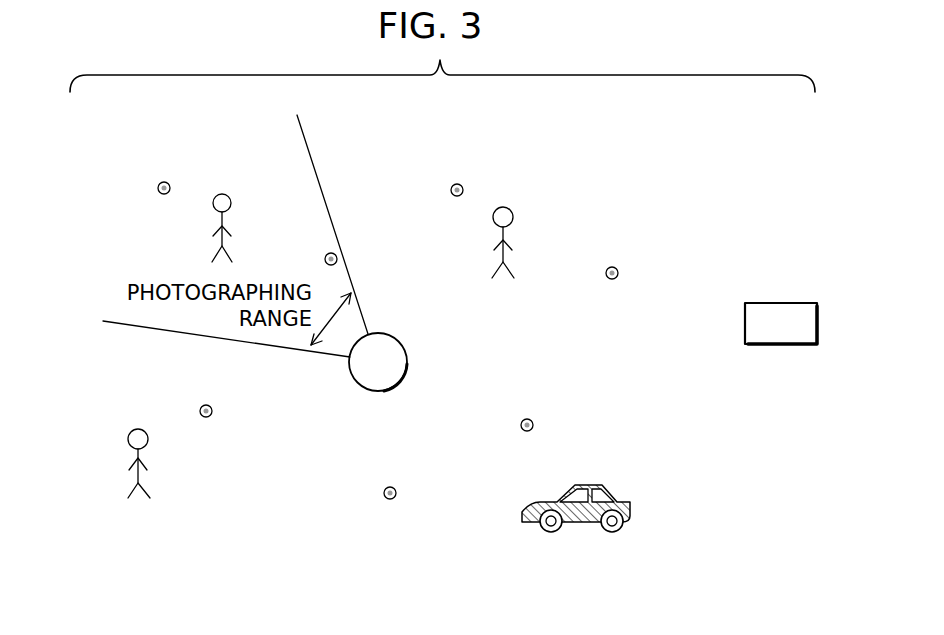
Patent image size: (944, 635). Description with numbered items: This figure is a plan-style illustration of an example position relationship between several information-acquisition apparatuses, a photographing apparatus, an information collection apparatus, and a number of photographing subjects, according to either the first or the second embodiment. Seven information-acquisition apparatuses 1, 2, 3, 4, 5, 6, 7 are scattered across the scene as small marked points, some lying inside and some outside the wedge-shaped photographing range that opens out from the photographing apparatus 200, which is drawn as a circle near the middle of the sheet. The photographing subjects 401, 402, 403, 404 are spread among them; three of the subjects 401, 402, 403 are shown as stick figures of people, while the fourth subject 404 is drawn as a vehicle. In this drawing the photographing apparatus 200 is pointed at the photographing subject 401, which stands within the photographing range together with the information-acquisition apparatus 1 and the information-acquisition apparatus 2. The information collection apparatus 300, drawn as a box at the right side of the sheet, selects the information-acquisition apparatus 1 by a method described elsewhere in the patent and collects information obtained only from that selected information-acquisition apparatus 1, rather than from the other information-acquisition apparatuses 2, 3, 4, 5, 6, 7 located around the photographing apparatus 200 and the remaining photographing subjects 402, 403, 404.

The information-acquisition apparatus 1 is at (168, 182).
The information-acquisition apparatus 2 is at (327, 254).
The information-acquisition apparatus 3 is at (462, 185).
The information-acquisition apparatus 4 is at (617, 268).
The information-acquisition apparatus 5 is at (211, 416).
The information-acquisition apparatus 6 is at (385, 489).
The information-acquisition apparatus 7 is at (532, 420).
The photographing apparatus 200 is at (407, 360).
The information collection apparatus 300 is at (783, 303).
The photographing subject 401 is at (229, 196).
The photographing subject 402 is at (511, 210).
The photographing subject 403 is at (131, 432).
The photographing subject 404 is at (600, 485).